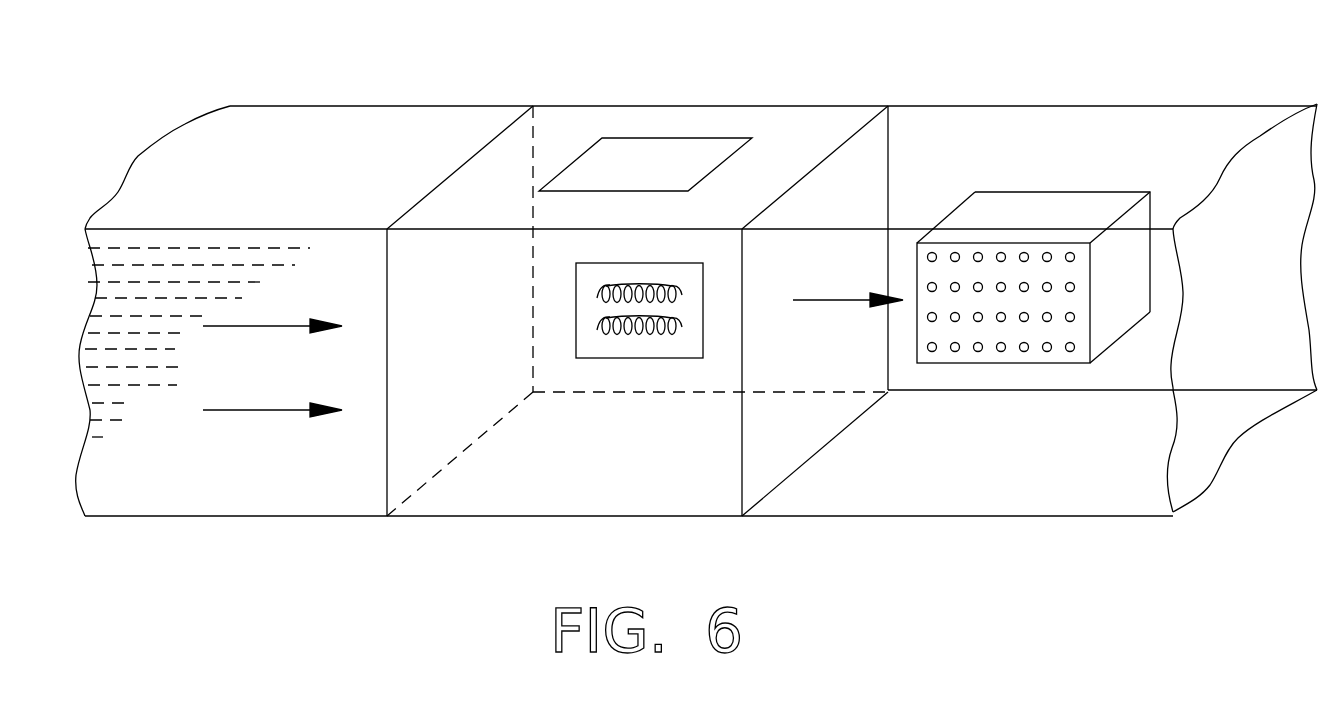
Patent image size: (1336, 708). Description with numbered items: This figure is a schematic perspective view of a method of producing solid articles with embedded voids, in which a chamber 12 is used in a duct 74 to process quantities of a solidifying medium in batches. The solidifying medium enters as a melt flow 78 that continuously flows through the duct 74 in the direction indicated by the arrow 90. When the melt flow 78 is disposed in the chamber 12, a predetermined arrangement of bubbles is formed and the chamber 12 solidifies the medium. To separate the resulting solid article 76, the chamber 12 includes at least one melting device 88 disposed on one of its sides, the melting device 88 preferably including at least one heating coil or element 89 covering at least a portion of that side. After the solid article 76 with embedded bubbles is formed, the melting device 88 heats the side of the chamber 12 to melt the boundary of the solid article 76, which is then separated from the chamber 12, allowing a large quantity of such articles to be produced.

The chamber 12 is at (723, 118).
The duct 74 is at (330, 106).
The solid article 76 is at (1010, 190).
The melt flow 78 is at (107, 265).
The melting device 88 is at (620, 163).
The heating coil or element 89 is at (672, 328).
The arrow 90 is at (263, 325).